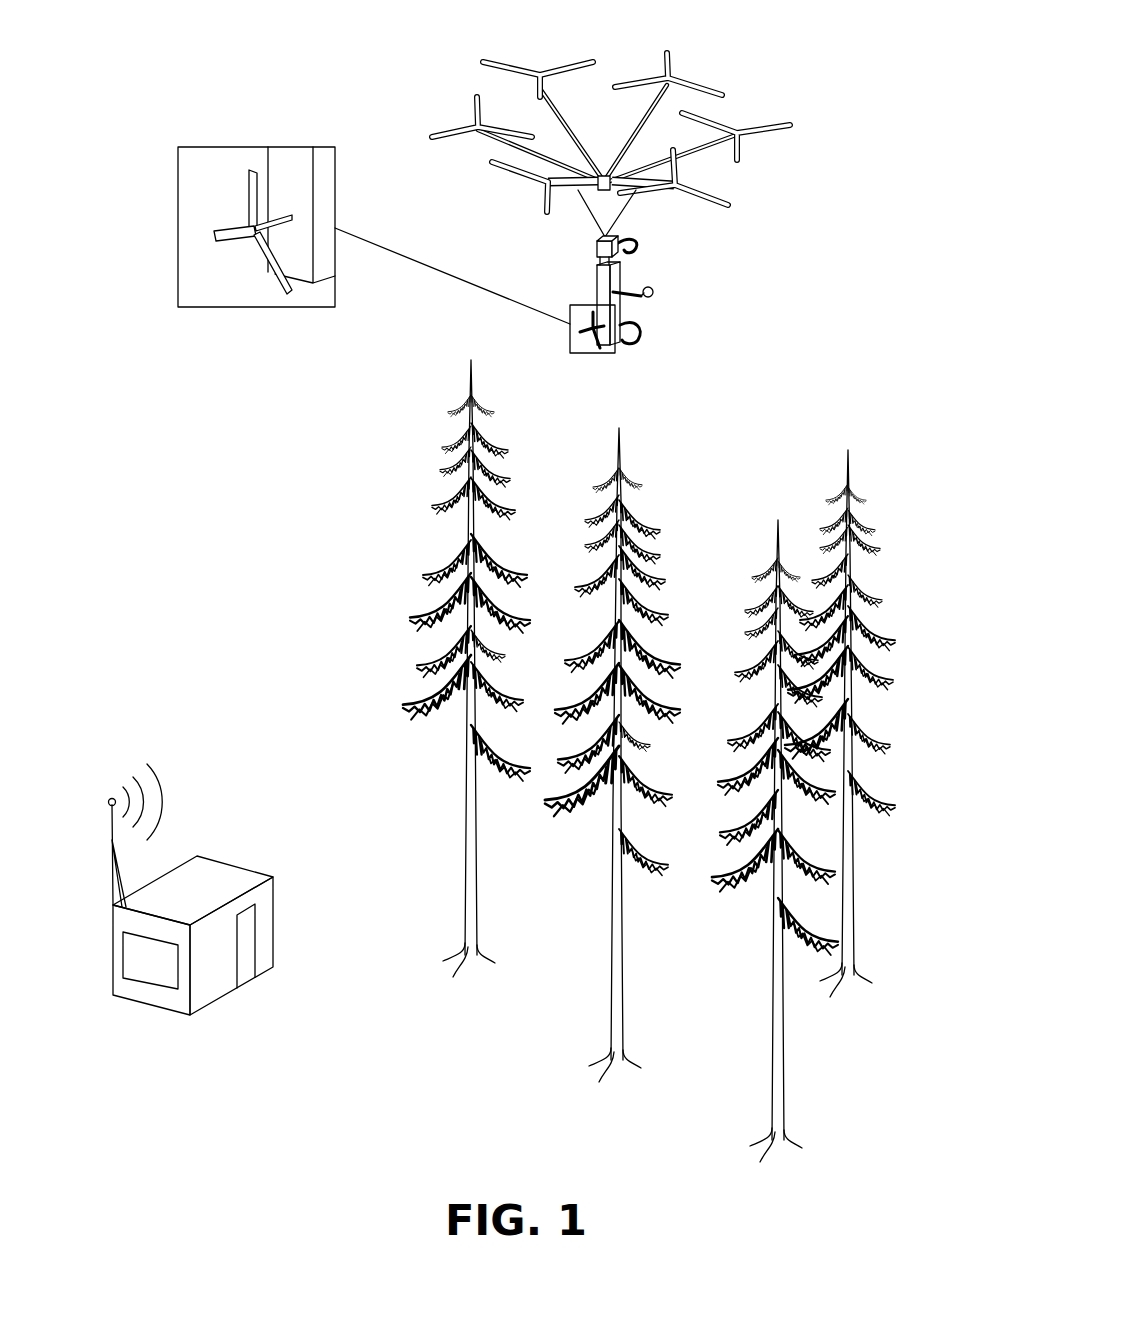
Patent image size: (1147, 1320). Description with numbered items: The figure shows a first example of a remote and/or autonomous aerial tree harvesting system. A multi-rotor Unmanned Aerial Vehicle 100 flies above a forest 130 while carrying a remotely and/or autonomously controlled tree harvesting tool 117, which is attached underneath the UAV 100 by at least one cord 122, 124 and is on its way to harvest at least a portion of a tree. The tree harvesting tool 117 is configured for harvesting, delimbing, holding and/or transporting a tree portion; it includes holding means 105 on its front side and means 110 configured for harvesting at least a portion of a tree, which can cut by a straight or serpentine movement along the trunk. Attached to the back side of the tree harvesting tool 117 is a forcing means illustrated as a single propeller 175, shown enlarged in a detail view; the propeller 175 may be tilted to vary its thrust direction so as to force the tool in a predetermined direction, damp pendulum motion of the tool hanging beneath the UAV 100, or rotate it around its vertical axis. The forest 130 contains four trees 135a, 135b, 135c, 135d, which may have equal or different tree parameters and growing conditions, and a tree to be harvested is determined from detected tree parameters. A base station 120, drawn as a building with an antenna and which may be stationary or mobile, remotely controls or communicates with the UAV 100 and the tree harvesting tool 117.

The Unmanned Aerial Vehicle 100 is at (766, 51).
The holding means 105 is at (640, 250).
The means configured for harvesting at least a portion of a tree 110 is at (619, 277).
The tree harvesting tool 117 is at (680, 320).
The base station 120 is at (205, 890).
The cord 122 is at (630, 213).
The cord 124 is at (580, 213).
The forest 130 is at (830, 420).
The tree 135a is at (473, 893).
The tree 135b is at (622, 992).
The tree 135c is at (781, 1054).
The tree 135d is at (851, 903).
The propeller 175 is at (252, 188).